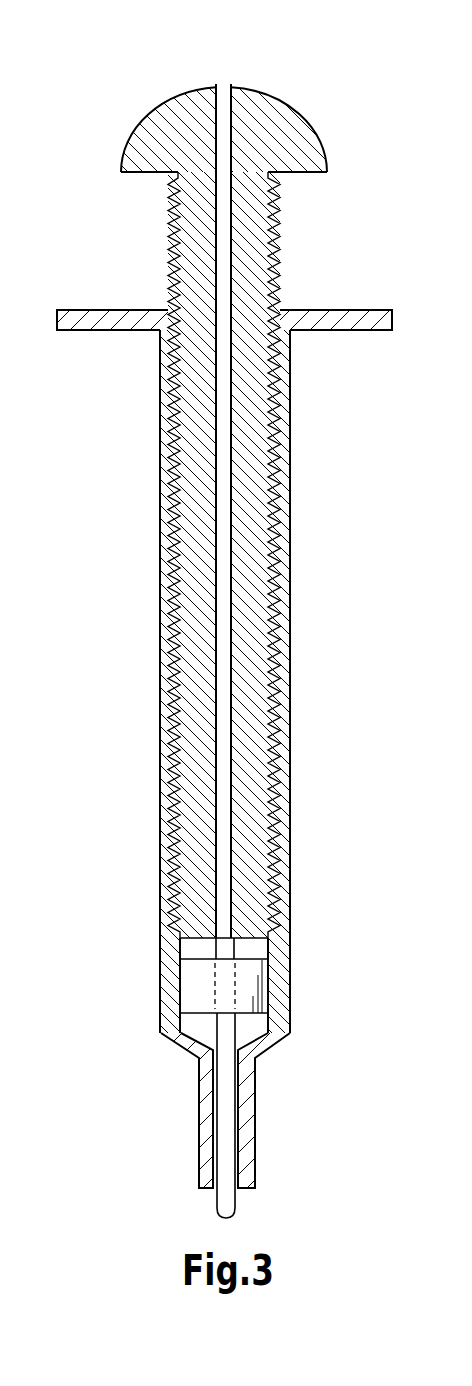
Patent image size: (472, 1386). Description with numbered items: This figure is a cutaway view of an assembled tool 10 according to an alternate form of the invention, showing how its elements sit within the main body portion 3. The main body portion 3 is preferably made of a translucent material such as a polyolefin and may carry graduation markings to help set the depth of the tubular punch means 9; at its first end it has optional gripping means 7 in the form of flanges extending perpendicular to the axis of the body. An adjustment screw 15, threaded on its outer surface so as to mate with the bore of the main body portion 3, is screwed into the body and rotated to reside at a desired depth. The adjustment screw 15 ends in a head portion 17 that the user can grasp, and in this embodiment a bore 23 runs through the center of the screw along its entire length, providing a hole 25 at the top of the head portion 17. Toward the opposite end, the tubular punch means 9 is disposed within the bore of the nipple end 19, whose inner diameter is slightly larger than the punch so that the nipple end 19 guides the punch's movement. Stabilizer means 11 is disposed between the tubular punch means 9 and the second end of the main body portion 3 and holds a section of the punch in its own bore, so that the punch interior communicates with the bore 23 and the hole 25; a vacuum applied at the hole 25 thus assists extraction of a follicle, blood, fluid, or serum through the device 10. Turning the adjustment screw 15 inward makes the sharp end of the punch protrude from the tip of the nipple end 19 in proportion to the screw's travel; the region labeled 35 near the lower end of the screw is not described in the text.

The assembled tool 10 is at (78, 218).
The main body portion 3 is at (290, 680).
The gripping means 7 is at (352, 309).
The tubular punch means 9 is at (217, 1200).
The stabilizer means 11 is at (190, 986).
The adjustment screw 15 is at (170, 263).
The head portion 17 is at (290, 107).
The nipple end 19 is at (254, 1118).
The bore 23 is at (223, 470).
The hole 25 is at (222, 86).
The shoulder 35 is at (225, 938).